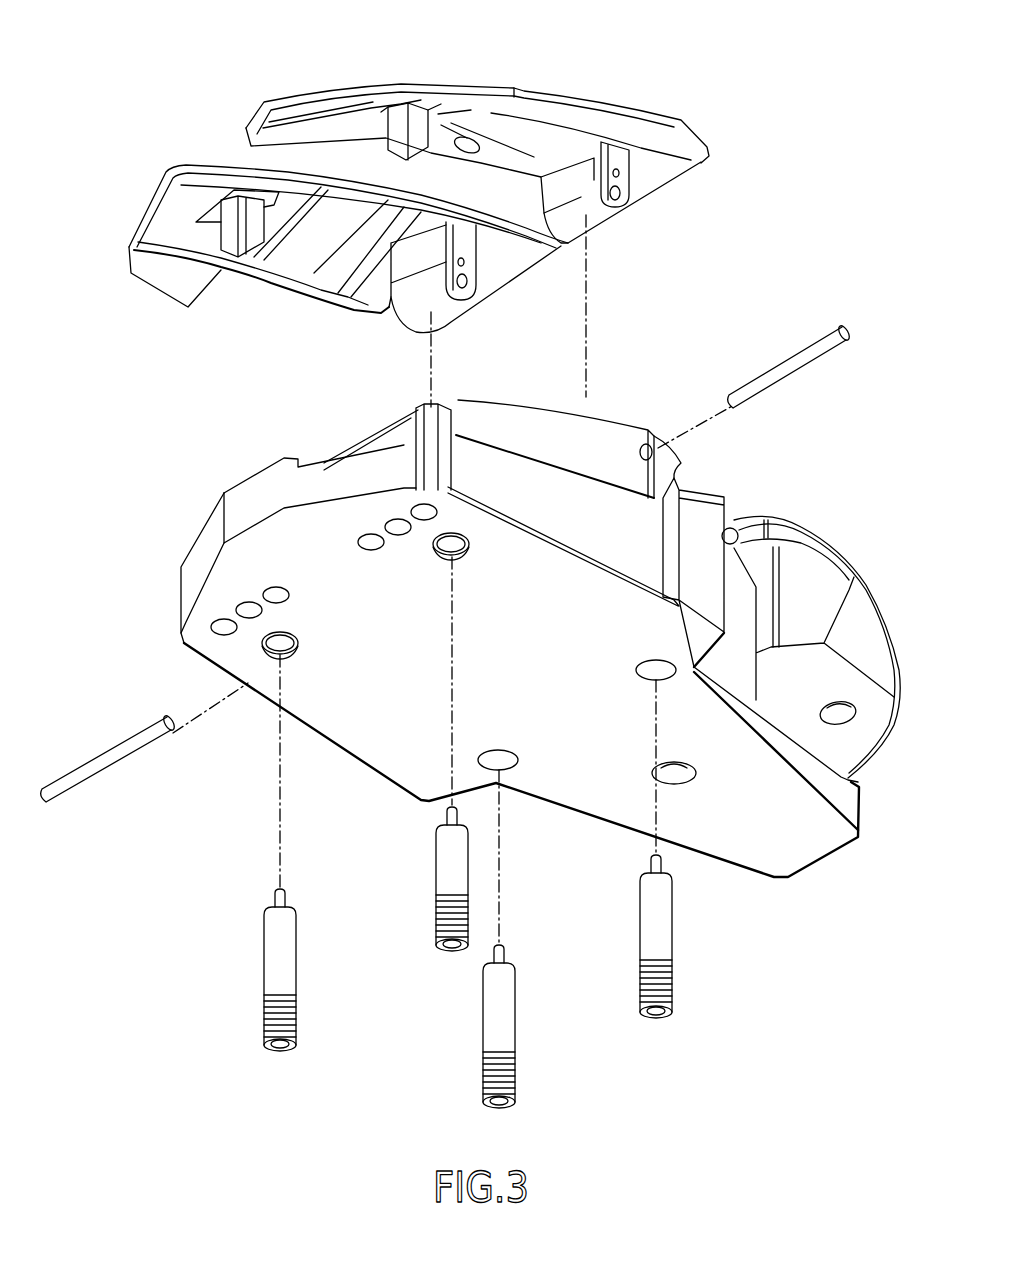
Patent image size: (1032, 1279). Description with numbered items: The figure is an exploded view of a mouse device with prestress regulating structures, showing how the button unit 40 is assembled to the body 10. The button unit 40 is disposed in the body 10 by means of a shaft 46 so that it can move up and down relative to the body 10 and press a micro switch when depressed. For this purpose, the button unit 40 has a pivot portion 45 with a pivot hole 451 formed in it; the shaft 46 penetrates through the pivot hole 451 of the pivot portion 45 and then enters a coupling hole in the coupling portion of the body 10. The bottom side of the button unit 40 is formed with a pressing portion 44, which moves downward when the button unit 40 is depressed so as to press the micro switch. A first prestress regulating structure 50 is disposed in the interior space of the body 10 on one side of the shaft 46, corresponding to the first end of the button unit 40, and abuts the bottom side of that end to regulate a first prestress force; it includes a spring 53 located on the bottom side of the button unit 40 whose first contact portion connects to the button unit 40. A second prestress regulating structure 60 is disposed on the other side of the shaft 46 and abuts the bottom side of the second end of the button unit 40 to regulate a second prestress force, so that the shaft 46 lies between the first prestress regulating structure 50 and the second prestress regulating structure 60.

The body 10 is at (790, 197).
The button unit 40 is at (543, 90).
The pressing portion 44 is at (398, 123).
The pivot portion 45 is at (617, 157).
The pivot hole 451 is at (620, 200).
The shaft 46 is at (108, 763).
The first prestress regulating structure 50 is at (453, 860).
The spring 53 is at (460, 143).
The second prestress regulating structure 60 is at (657, 913).